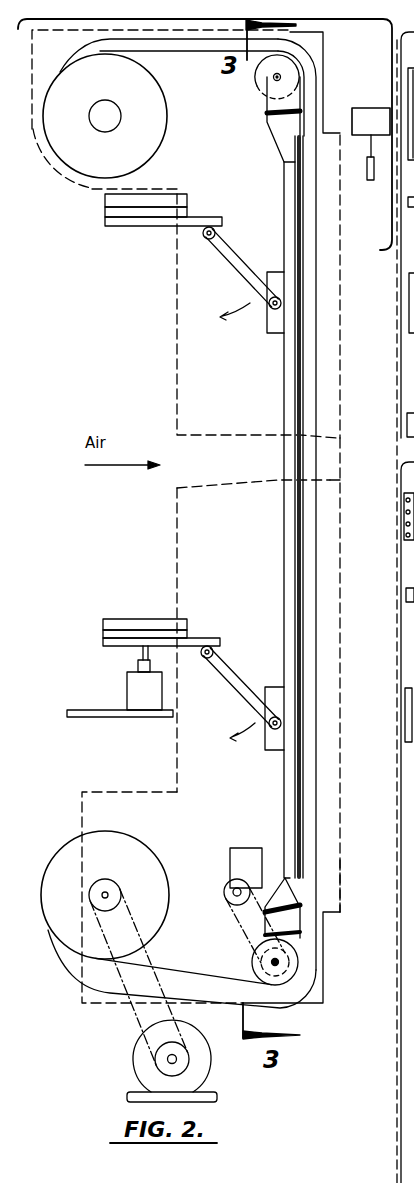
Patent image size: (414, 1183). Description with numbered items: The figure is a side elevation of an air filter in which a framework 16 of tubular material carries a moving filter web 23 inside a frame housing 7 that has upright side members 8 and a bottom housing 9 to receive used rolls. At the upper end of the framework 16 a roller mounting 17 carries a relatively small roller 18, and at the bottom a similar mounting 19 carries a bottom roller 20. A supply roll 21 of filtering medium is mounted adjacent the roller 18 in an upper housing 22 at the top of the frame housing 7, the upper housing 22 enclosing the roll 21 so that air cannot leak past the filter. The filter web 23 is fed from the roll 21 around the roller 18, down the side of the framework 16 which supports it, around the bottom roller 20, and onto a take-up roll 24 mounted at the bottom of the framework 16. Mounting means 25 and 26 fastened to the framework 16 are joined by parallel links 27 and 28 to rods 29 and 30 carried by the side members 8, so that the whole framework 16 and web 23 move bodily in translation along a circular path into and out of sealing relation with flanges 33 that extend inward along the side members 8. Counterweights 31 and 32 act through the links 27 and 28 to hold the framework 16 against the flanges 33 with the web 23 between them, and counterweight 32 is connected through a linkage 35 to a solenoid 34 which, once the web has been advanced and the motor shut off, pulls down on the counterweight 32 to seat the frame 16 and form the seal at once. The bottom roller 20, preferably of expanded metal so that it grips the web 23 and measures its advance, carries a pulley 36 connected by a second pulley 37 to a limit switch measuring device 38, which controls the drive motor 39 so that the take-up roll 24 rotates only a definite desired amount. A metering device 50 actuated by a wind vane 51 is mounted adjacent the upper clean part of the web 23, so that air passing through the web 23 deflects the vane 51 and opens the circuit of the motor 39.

The frame housing 7 is at (177, 369).
The upright side members 8 is at (205, 527).
The bottom housing 9 is at (78, 800).
The tubular framework 16 is at (284, 406).
The roller mounting 17 is at (287, 136).
The roller 18 is at (256, 86).
The mounting 19 is at (302, 953).
The bottom roller 20 is at (290, 976).
The supply roll 21 is at (97, 155).
The upper housing 22 is at (55, 176).
The filter web 23 is at (200, 42).
The take-up roll 24 is at (150, 860).
The mounting means 25 is at (277, 323).
The mounting means 26 is at (277, 745).
The parallel link 27 is at (248, 268).
The parallel link 28 is at (243, 697).
The rod 29 is at (215, 233).
The rod 30 is at (215, 648).
The counterweight 31 is at (137, 210).
The counterweight 32 is at (137, 623).
The flanges 33 is at (338, 897).
The solenoid 34 is at (143, 698).
The linkage 35 is at (138, 650).
The pulley 36 is at (268, 962).
The second pulley 37 is at (226, 893).
The limit switch measuring device 38 is at (238, 855).
The drive motor 39 is at (143, 1055).
The metering device 50 is at (375, 117).
The wind vane 51 is at (375, 182).